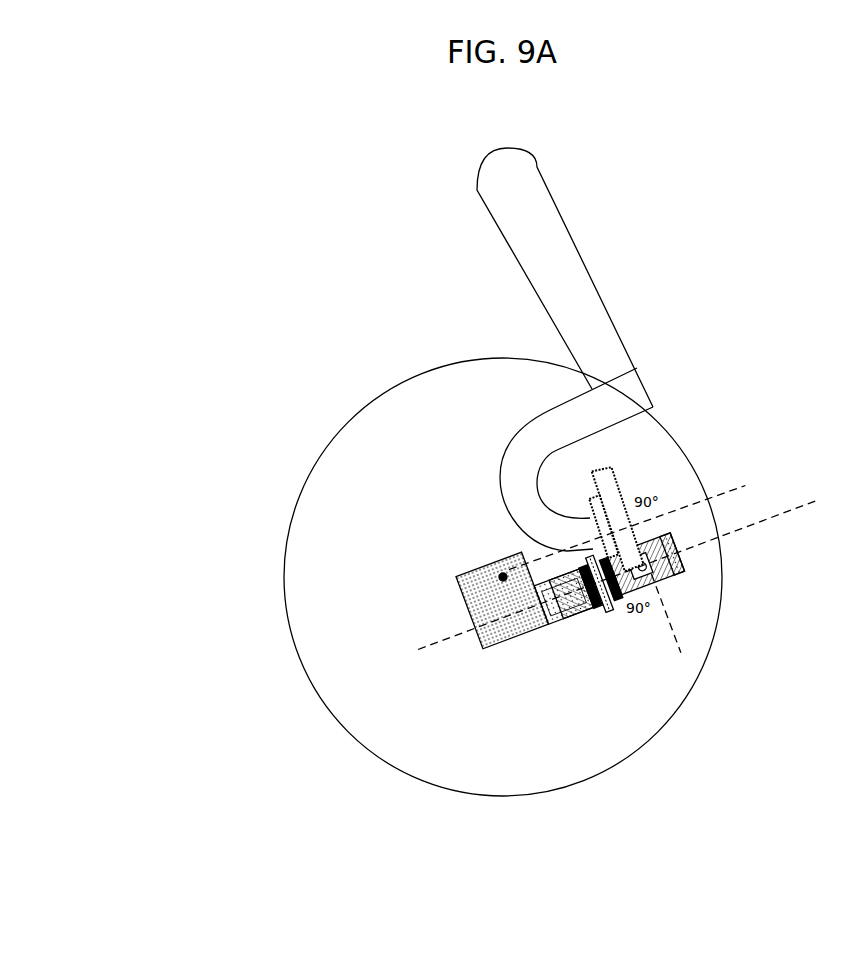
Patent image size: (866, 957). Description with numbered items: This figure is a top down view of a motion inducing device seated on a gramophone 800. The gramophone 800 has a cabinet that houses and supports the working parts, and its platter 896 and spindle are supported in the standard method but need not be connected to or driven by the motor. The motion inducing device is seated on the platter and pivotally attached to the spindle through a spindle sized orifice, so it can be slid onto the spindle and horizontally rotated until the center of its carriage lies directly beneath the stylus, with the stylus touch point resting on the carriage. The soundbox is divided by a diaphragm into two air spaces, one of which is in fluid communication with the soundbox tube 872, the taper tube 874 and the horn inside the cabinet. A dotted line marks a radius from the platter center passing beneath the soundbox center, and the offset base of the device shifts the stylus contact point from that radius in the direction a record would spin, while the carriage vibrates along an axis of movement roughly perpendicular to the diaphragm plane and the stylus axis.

The gramophone 800 is at (178, 356).
The soundbox tube 872 is at (522, 458).
The taper tube 874 is at (563, 272).
The platter 896 is at (503, 742).